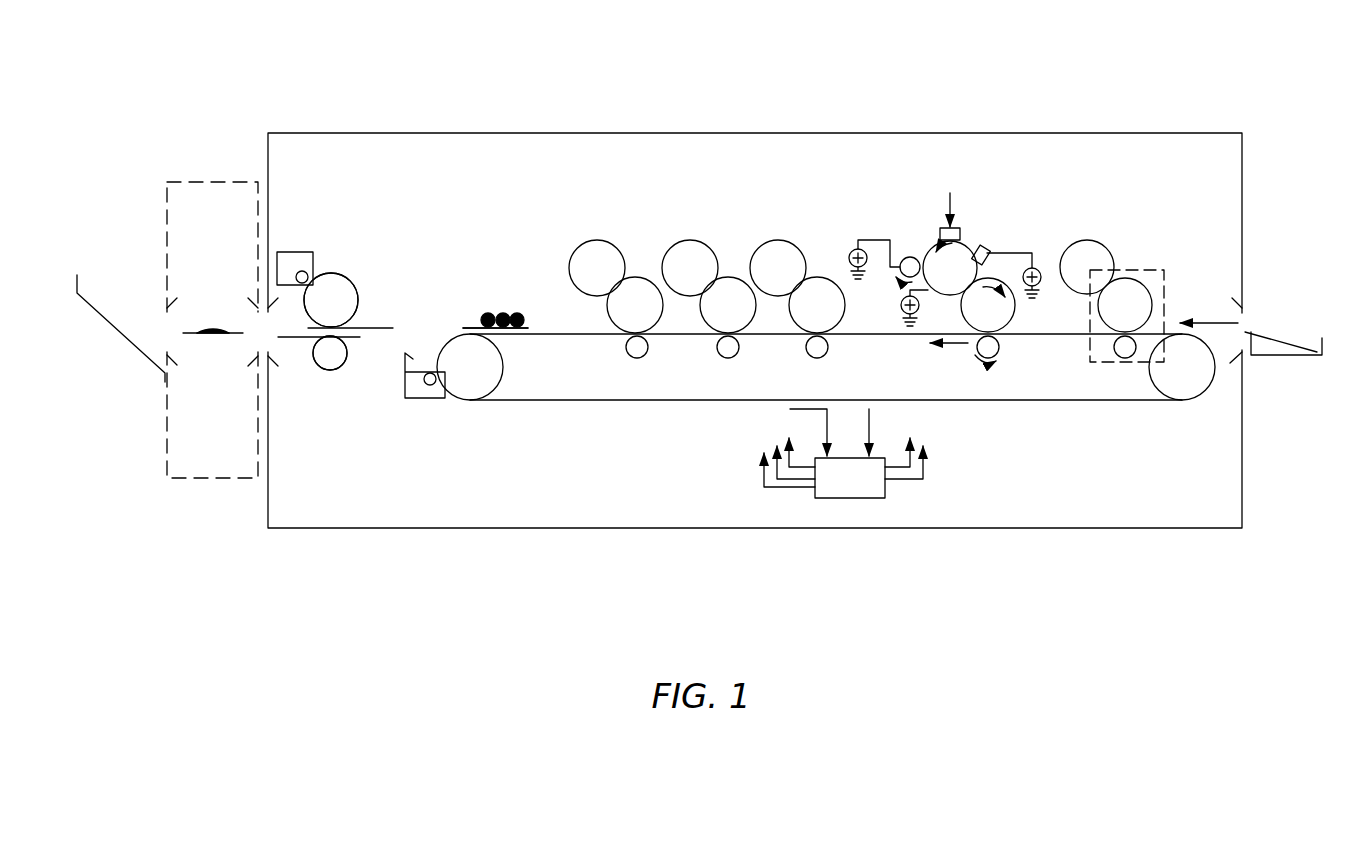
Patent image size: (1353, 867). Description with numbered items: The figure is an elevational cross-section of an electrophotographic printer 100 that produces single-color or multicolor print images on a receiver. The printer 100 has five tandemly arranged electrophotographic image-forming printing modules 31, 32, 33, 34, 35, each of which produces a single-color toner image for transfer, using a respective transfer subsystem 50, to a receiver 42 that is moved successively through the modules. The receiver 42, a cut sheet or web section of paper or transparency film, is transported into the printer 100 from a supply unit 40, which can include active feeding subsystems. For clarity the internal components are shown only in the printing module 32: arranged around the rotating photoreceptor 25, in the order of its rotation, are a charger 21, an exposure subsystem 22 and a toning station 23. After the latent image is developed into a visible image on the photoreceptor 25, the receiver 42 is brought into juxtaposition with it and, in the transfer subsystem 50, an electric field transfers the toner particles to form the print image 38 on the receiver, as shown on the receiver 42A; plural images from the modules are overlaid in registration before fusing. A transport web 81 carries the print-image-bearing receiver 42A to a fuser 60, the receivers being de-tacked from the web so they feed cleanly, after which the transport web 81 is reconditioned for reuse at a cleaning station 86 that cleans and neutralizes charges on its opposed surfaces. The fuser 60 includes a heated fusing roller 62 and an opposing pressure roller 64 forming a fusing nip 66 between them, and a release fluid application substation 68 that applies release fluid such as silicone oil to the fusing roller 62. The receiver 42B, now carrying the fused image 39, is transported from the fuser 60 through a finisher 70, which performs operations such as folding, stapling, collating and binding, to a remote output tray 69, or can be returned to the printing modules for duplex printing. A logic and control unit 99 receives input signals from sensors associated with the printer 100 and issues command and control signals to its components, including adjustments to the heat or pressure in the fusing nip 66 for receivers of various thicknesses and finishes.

The electrophotographic printer 100 is at (1032, 96).
The printing module 32 is at (866, 184).
The printing module 31 is at (1100, 228).
The printing module 33 is at (760, 232).
The printing module 34 is at (672, 232).
The printing module 35 is at (584, 232).
The charger 21 is at (988, 246).
The exposure subsystem 22 is at (960, 232).
The toning station 23 is at (910, 257).
The photoreceptor 25 is at (950, 293).
The print image 38 is at (488, 312).
The fused image 39 is at (214, 327).
The supply unit 40 is at (1298, 364).
The receiver 42 is at (1273, 340).
The receiver 42A is at (508, 330).
The receiver 42B is at (238, 335).
The transfer subsystem 50 is at (1098, 363).
The fuser 60 is at (360, 256).
The fusing roller 62 is at (357, 286).
The pressure roller 64 is at (330, 371).
The fusing nip 66 is at (362, 332).
The release fluid application substation 68 is at (296, 252).
The output tray 69 is at (114, 332).
The finisher 70 is at (219, 478).
The transport web 81 is at (1125, 401).
The cleaning station 86 is at (426, 399).
The logic and control unit (LCU) 99 is at (885, 491).